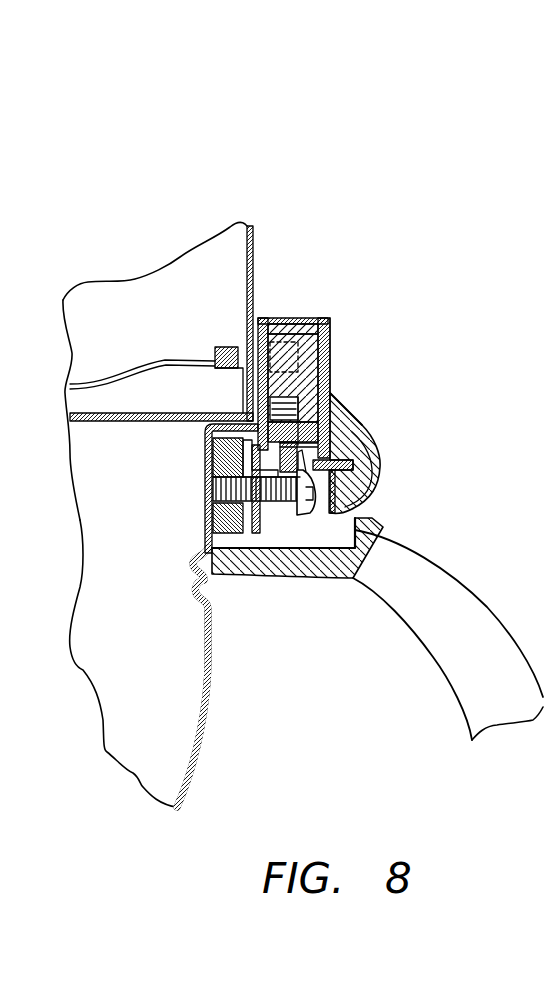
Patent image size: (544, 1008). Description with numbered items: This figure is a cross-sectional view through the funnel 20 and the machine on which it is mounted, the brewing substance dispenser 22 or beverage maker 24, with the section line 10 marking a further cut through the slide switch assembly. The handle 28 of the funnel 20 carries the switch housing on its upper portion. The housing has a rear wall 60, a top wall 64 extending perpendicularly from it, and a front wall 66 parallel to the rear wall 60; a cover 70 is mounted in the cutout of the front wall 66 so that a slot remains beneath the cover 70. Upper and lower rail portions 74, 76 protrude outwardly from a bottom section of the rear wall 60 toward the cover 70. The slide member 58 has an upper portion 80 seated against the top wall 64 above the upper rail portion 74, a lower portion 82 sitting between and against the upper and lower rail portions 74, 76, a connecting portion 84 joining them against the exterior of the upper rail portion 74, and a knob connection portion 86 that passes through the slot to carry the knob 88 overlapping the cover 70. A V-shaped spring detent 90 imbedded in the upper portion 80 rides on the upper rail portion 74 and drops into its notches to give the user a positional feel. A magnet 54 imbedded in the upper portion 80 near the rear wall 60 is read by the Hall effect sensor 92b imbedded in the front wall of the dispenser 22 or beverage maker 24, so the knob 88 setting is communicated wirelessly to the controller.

The section line 10- 10 is at (283, 250).
The funnel 20 is at (132, 727).
The brewing substance dispenser 22 is at (100, 307).
The beverage maker 24 is at (142, 374).
The handle 28 is at (447, 603).
The magnet 54 is at (248, 333).
The slide member 58 is at (330, 390).
The rear wall 60 is at (265, 317).
The top wall 64 is at (312, 317).
The front wall 66 is at (372, 500).
The cover 70 is at (332, 350).
The upper rail portion 74 is at (302, 410).
The lower rail portion 76 is at (345, 448).
The upper portion 80 is at (230, 450).
The lower portion 82 is at (332, 330).
The connecting portion 84 is at (310, 370).
The knob connection portion 86 is at (355, 468).
The knob 88 is at (355, 483).
The spring detent 90 is at (250, 406).
The sensor 92b is at (215, 352).